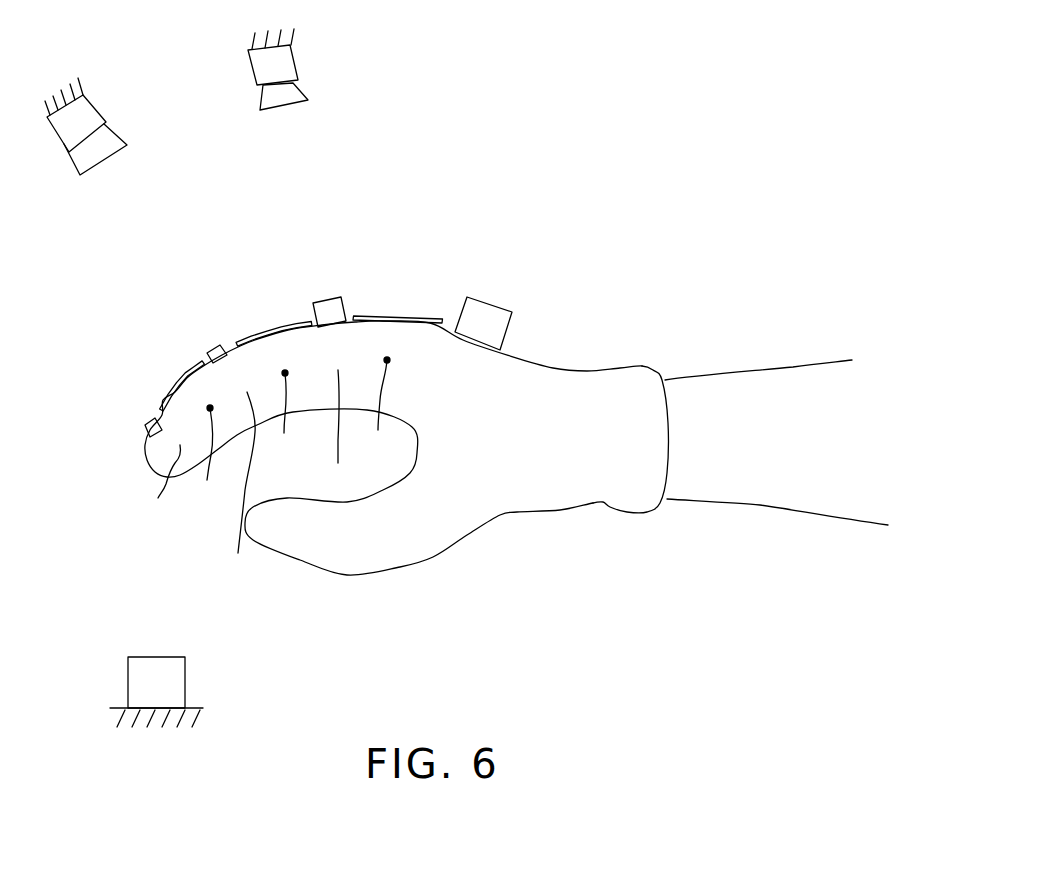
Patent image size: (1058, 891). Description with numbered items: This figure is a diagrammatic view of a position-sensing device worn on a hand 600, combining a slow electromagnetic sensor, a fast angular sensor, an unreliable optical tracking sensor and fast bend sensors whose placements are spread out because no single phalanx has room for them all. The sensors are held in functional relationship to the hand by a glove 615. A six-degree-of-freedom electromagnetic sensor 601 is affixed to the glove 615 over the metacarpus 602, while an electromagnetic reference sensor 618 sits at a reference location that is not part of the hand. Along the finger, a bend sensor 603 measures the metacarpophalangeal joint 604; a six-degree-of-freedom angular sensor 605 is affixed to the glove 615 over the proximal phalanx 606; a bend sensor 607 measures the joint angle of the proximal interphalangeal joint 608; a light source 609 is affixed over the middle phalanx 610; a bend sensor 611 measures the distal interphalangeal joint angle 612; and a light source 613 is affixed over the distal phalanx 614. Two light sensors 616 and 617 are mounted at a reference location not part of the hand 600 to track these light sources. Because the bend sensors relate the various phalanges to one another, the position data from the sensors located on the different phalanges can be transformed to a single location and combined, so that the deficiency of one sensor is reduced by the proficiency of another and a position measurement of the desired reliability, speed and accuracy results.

The hand 600 is at (468, 552).
The 6-DOF-E sensor 601 is at (482, 310).
The metacarpus 602 is at (495, 392).
The bend sensor 603 is at (388, 313).
The metacarpophalangeal joint 604 is at (372, 409).
The 6-DOF-A sensor 605 is at (330, 302).
The proximal phalanx 606 is at (337, 432).
The bend sensor 607 is at (270, 327).
The proximal interphalangeal joint 608 is at (282, 416).
The light source 609 is at (215, 342).
The middle phalanx 610 is at (232, 489).
The bend sensor 611 is at (178, 385).
The distal interphalangeal joint angle 612 is at (213, 456).
The light source 613 is at (145, 415).
The distal phalanx 614 is at (155, 488).
The glove 615 is at (592, 503).
The light sensor 616 is at (63, 137).
The light sensor 617 is at (280, 95).
The electromagnetic reference sensor 618 is at (172, 682).